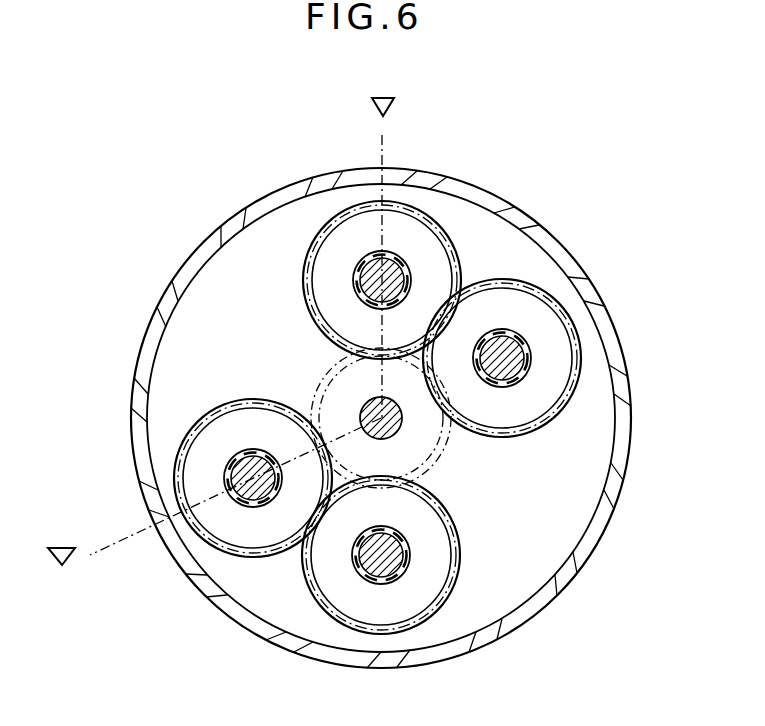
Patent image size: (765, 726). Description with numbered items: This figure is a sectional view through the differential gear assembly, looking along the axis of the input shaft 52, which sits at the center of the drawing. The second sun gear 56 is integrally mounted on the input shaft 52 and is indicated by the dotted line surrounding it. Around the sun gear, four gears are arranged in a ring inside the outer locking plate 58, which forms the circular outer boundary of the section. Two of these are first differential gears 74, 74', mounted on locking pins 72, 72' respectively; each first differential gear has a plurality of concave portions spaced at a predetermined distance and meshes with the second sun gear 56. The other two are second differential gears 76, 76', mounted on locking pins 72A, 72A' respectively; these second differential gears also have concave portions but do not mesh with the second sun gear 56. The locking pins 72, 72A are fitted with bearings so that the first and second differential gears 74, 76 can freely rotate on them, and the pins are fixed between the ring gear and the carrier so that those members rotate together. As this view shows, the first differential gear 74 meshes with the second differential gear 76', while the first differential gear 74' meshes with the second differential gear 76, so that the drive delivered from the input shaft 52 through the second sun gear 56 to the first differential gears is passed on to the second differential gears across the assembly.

The input shaft 52 is at (385, 423).
The second sun gear 56 is at (337, 404).
The locking plate 58 is at (155, 317).
The locking pin 72 is at (347, 217).
The locking pin 72' is at (460, 600).
The locking pin 72A is at (233, 562).
The locking pin 72A' is at (581, 311).
The first differential gear 74 is at (425, 264).
The first differential gear 74' is at (362, 588).
The second differential gear 76 is at (220, 517).
The second differential gear 76' is at (559, 358).